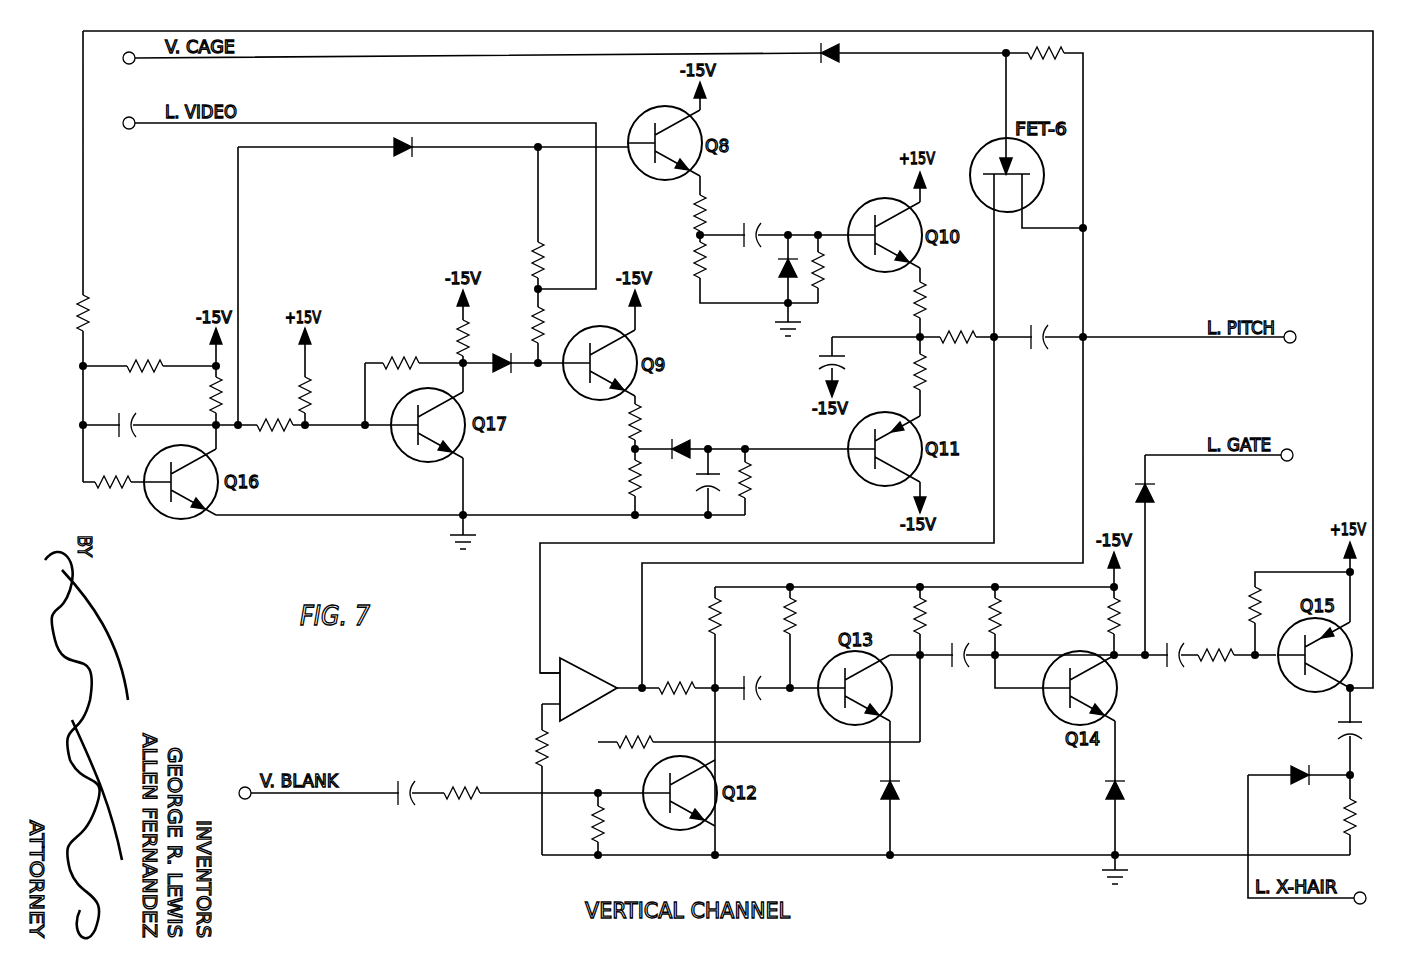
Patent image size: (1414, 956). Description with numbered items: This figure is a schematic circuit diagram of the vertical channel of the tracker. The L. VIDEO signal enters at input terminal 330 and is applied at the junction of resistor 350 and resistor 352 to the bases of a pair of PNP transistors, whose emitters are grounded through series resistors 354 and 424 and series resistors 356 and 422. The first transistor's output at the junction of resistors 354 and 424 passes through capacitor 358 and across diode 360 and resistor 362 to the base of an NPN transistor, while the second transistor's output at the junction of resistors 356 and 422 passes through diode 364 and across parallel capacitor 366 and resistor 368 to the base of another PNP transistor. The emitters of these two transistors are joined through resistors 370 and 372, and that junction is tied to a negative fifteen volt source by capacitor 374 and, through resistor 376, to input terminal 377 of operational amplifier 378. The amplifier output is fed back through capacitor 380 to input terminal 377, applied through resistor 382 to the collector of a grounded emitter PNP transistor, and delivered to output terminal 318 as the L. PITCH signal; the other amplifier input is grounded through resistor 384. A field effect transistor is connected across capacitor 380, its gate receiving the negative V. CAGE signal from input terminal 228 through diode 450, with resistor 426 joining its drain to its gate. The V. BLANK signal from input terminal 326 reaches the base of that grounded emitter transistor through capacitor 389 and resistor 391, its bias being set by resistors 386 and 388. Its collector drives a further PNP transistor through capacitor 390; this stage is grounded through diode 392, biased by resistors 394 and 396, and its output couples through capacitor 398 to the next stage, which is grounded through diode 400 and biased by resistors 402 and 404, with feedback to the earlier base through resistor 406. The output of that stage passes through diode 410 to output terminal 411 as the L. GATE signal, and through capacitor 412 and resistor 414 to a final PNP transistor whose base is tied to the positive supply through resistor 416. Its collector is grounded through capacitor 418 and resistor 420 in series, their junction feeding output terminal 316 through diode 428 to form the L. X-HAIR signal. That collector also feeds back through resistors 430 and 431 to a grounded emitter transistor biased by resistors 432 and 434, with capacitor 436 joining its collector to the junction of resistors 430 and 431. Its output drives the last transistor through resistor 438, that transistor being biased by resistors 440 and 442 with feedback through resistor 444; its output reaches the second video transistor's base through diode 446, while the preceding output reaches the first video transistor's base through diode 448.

The input terminal 228 is at (129, 64).
The input terminal 330 is at (129, 129).
The diode 448 is at (404, 156).
The diode 450 is at (829, 63).
The resistor 426 is at (1046, 60).
The resistor 430 is at (80, 305).
The resistor 434 is at (140, 362).
The resistor 432 is at (212, 392).
The capacitor 436 is at (117, 415).
The resistor 431 is at (112, 477).
The resistor 438 is at (280, 419).
The resistor 440 is at (311, 394).
The resistor 444 is at (396, 360).
The resistor 442 is at (458, 330).
The diode 446 is at (500, 371).
The resistor 352 is at (540, 245).
The resistor 350 is at (533, 322).
The resistor 354 is at (691, 213).
The resistor 424 is at (691, 261).
The capacitor 358 is at (745, 222).
The diode 360 is at (777, 277).
The resistor 362 is at (823, 280).
The resistor 370 is at (926, 301).
The resistor 372 is at (926, 365).
The capacitor 374 is at (820, 357).
The resistor 376 is at (958, 334).
The capacitor 380 is at (1044, 352).
The output terminal 318 is at (1295, 333).
The resistor 356 is at (627, 432).
The diode 364 is at (686, 439).
The capacitor 366 is at (698, 488).
The resistor 368 is at (751, 480).
The resistor 422 is at (628, 478).
The resistor 388 is at (710, 611).
The resistor 394 is at (796, 627).
The resistor 396 is at (915, 609).
The resistor 402 is at (1002, 625).
The resistor 404 is at (1108, 615).
The operational amplifier 378 is at (580, 668).
The input terminal 377 is at (556, 679).
The resistor 382 is at (668, 683).
The resistor 384 is at (537, 737).
The resistor 406 is at (638, 735).
The capacitor 390 is at (762, 699).
The capacitor 398 is at (966, 678).
The diode 392 is at (901, 788).
The diode 400 is at (1104, 789).
The capacitor 412 is at (1181, 640).
The resistor 414 is at (1229, 660).
The resistor 416 is at (1250, 608).
The diode 410 is at (1156, 495).
The output terminal 411 is at (1292, 450).
The capacitor 418 is at (1336, 722).
The diode 428 is at (1298, 767).
The resistor 420 is at (1342, 815).
The output terminal 316 is at (1355, 893).
The input terminal 326 is at (248, 799).
The capacitor 389 is at (394, 805).
The resistor 391 is at (461, 785).
The resistor 386 is at (605, 835).